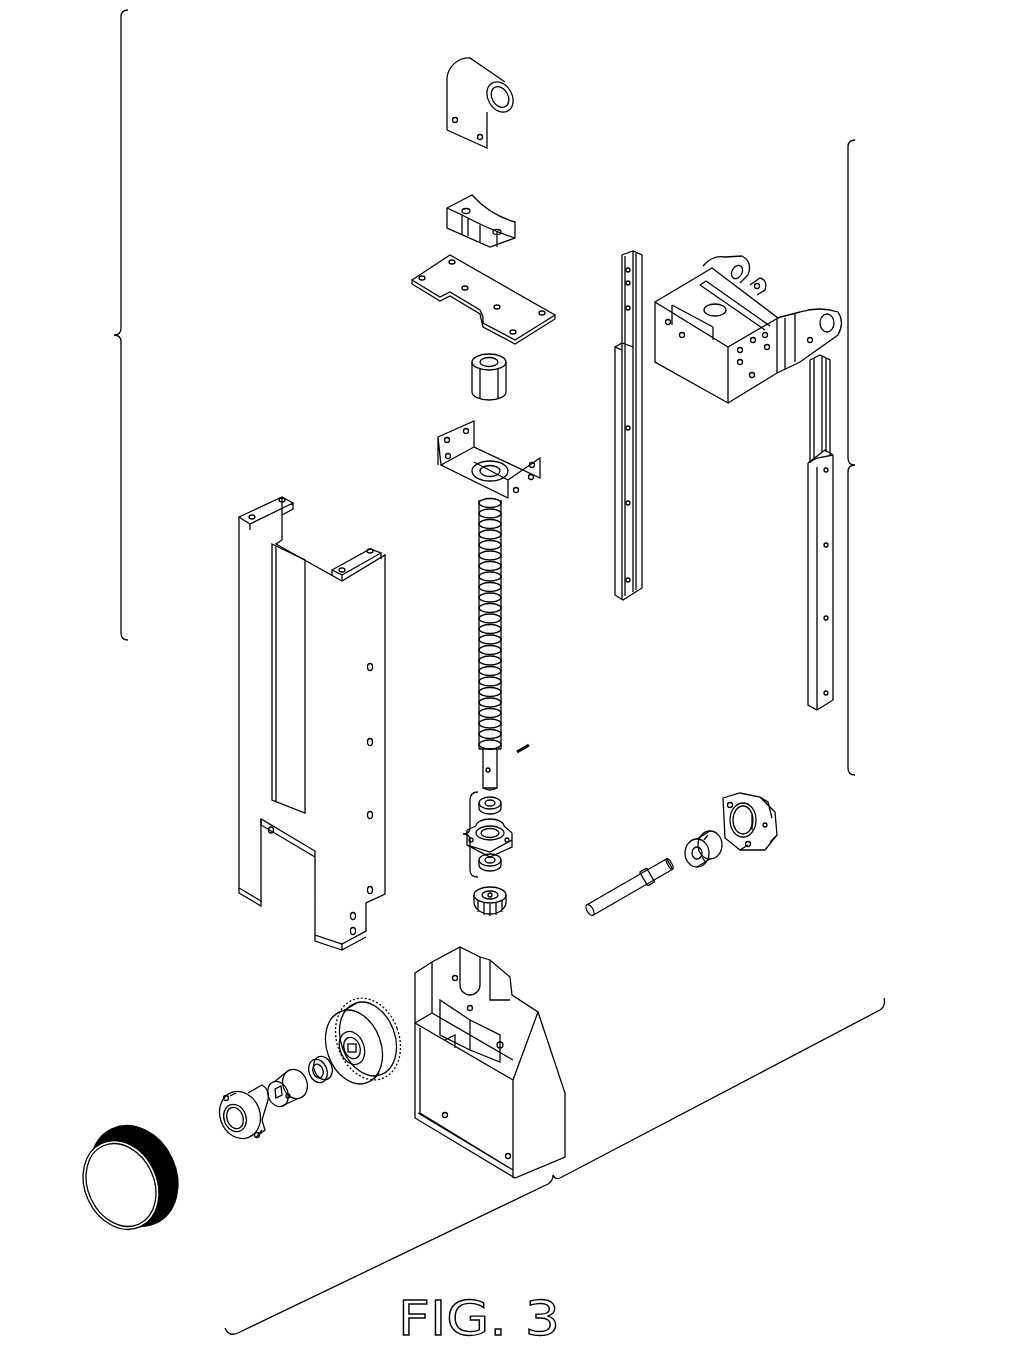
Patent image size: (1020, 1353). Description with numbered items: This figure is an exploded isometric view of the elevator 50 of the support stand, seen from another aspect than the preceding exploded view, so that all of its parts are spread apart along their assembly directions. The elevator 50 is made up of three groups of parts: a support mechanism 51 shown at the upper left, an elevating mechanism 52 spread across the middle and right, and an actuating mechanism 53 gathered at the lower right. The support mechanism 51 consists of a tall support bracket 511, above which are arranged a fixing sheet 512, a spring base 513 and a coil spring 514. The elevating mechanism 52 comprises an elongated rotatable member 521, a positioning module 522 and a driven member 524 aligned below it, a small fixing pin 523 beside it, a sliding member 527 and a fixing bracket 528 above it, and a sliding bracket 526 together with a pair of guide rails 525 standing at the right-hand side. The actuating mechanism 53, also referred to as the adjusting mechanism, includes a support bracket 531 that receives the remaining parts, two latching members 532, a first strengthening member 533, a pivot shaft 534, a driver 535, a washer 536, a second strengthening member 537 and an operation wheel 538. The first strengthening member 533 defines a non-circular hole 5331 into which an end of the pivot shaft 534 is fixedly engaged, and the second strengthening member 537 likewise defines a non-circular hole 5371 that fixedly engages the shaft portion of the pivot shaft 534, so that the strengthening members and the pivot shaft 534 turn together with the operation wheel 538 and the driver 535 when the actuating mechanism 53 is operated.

The elevator 50 is at (618, 48).
The support mechanism 51 is at (99, 325).
The support bracket 511 is at (230, 628).
The fixing sheet 512 is at (405, 253).
The spring base 513 is at (440, 188).
The coil spring 514 is at (440, 78).
The elevating mechanism 52 is at (876, 457).
The rotatable member 521 is at (512, 584).
The positioning module 522 is at (463, 834).
The fixing pin 523 is at (527, 742).
The driven member 524 is at (470, 893).
The guide rails 525 is at (672, 478).
The sliding bracket 526 is at (716, 240).
The sliding member 527 is at (514, 357).
The fixing bracket 528 is at (525, 443).
The actuating mechanism 53 is at (555, 1166).
The support bracket 531 is at (570, 1070).
The latching members 532 is at (767, 857).
The first strengthening member 533 is at (715, 878).
The non-circular hole 5331 is at (692, 852).
The pivot shaft 534 is at (633, 912).
The driver 535 is at (381, 1097).
The washer 536 is at (326, 1093).
The second strengthening member 537 is at (275, 1065).
The non-circular hole 5371 is at (288, 1098).
The operation wheel 538 is at (105, 1118).